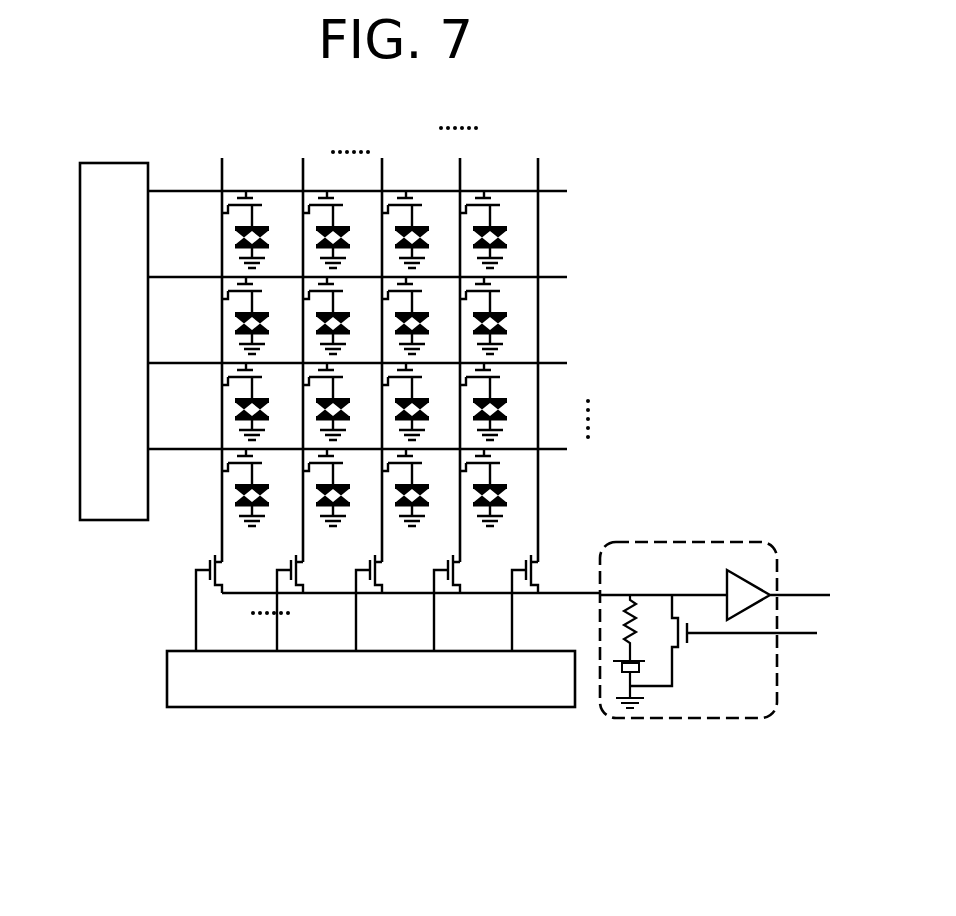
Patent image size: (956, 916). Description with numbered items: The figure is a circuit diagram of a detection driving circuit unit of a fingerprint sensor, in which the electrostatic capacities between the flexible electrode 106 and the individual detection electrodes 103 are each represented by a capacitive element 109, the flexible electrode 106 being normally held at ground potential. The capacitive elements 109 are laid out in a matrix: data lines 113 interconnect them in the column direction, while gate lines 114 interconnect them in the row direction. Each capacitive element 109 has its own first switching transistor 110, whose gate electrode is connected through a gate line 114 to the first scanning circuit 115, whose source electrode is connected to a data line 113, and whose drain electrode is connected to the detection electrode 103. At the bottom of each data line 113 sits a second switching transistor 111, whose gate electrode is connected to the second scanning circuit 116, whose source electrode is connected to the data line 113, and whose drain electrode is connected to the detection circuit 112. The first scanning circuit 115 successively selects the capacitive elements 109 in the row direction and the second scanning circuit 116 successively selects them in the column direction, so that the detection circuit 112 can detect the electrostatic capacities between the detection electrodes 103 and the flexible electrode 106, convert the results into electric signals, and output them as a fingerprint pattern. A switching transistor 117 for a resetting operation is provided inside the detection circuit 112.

The detection electrode 103 is at (508, 229).
The flexible electrode 106 is at (508, 247).
The capacitive element 109 is at (508, 238).
The first switching transistor 110 is at (499, 191).
The second switching transistor 111 is at (297, 578).
The detection circuit 112 is at (715, 618).
The data line 113 is at (222, 173).
The gate line 114 is at (560, 363).
The first scanning circuit 115 is at (120, 503).
The second scanning circuit 116 is at (300, 694).
The switching transistor for resetting operation 117 is at (683, 647).